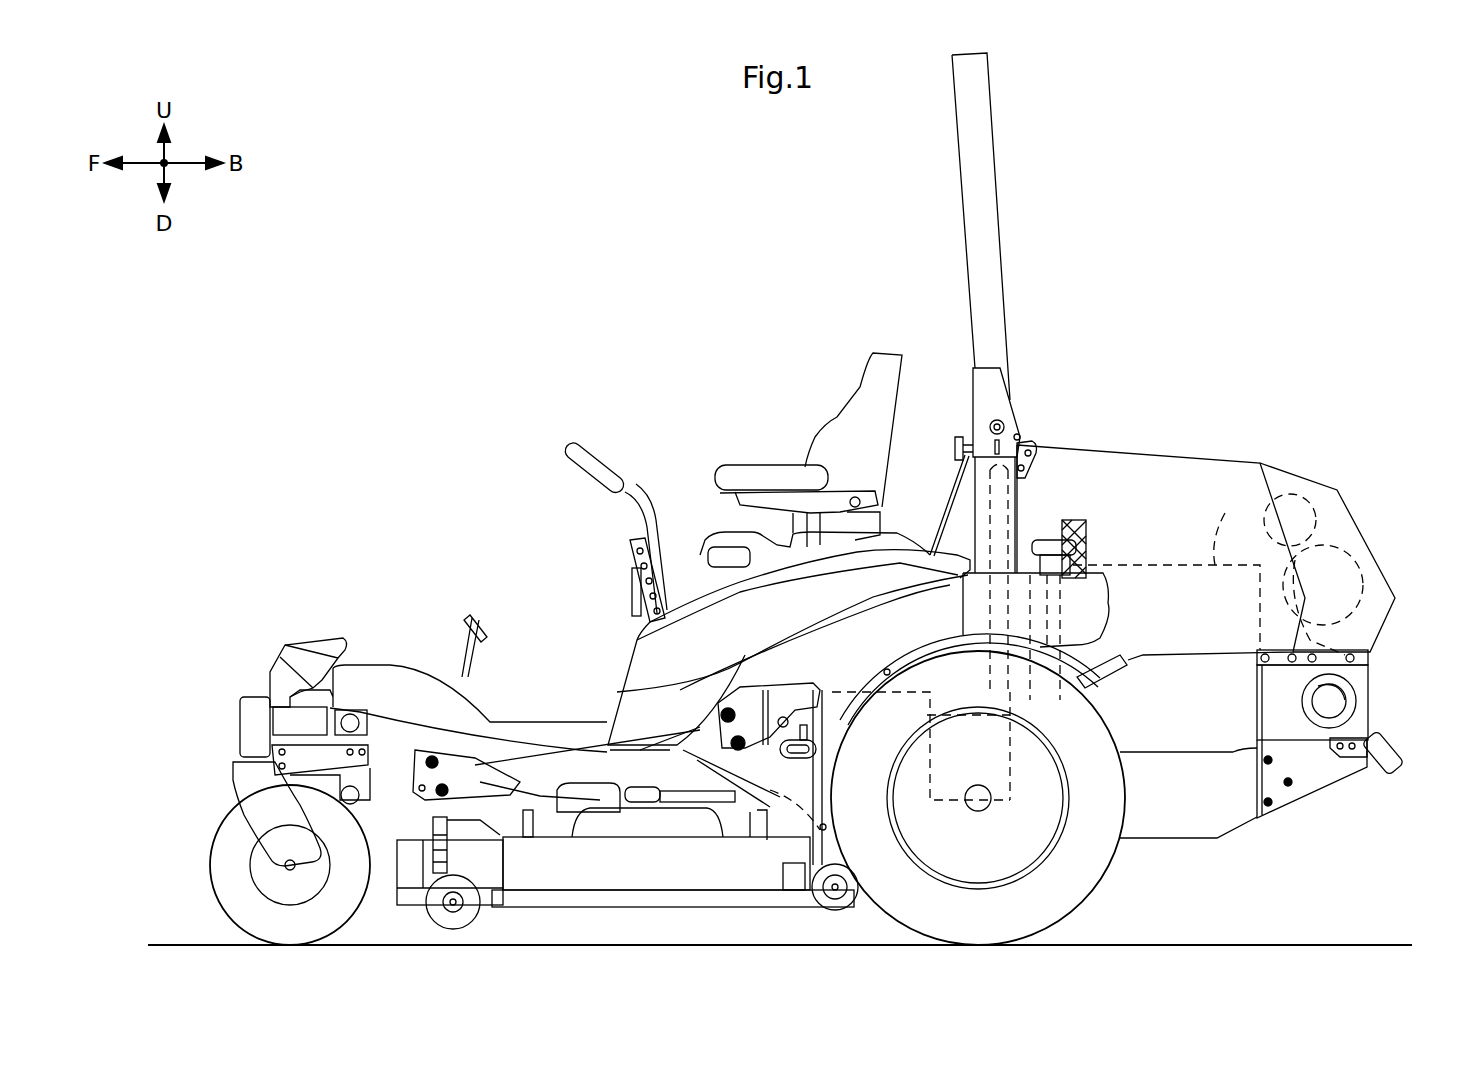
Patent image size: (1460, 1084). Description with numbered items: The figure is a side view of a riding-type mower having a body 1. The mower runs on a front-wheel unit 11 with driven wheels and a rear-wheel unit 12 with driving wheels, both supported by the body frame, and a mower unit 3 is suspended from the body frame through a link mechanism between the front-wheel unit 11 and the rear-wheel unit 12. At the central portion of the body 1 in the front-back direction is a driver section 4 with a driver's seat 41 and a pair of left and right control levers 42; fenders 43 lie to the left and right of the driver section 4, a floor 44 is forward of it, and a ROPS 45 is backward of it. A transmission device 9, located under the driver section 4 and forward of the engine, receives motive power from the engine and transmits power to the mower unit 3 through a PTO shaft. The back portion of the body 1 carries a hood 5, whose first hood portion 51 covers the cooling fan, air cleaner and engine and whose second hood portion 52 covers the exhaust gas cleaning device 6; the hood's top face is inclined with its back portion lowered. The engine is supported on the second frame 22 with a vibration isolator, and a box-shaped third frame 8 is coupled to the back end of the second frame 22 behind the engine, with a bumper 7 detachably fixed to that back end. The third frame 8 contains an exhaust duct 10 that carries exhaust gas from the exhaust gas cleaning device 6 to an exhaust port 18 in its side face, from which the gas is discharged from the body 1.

The body 1 is at (452, 408).
The mower unit 3 is at (625, 908).
The driver section 4 is at (741, 378).
The hood 5 is at (1179, 520).
The exhaust gas cleaning device 6 is at (1362, 553).
The bumper 7 is at (1392, 770).
The third frame 8 is at (1322, 800).
The transmission device 9 is at (912, 692).
The exhaust duct 10 is at (1305, 515).
The front-wheel unit 11 is at (232, 893).
The rear-wheel unit 12 is at (1082, 883).
The exhaust port 18 is at (1348, 713).
The second frame 22 is at (1215, 808).
The driver's seat 41 is at (858, 406).
The control levers 42 is at (591, 458).
The fender 43 is at (632, 665).
The floor 44 is at (548, 718).
The ROPS 45 is at (990, 220).
The first hood portion 51 is at (1101, 460).
The second hood portion 52 is at (1355, 522).